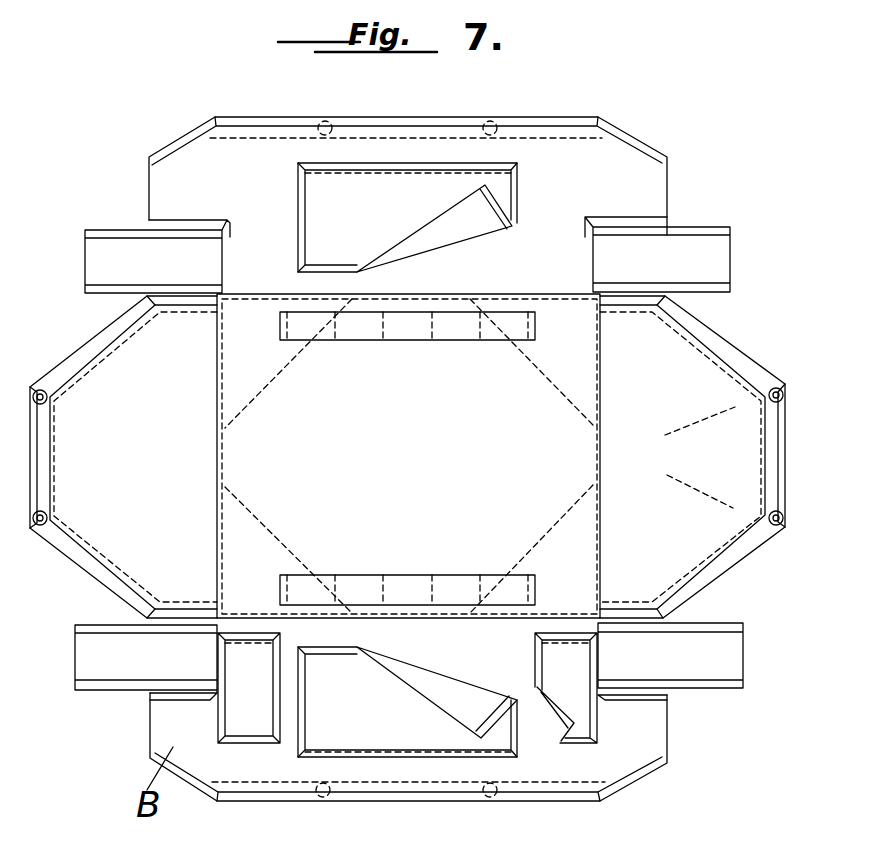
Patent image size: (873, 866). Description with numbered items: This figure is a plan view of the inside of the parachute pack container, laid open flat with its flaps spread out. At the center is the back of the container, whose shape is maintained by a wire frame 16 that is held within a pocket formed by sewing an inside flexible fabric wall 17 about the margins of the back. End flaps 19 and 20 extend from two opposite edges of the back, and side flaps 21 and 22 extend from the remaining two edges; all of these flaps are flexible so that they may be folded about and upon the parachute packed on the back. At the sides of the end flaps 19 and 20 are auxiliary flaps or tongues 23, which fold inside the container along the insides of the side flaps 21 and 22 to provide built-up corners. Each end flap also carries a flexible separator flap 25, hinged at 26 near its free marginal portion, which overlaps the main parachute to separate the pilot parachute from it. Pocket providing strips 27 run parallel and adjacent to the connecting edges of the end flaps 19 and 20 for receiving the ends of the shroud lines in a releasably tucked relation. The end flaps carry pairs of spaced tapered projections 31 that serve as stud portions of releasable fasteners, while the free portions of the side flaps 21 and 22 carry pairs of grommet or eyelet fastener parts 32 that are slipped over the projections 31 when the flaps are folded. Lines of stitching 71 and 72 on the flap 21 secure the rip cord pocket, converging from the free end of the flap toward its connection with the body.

The wire frame 16 is at (265, 392).
The inside flexible fabric wall 17 is at (547, 435).
The end flap 19 is at (578, 168).
The end flap 20 is at (567, 760).
The side flap 21 is at (713, 538).
The side flap 22 is at (97, 537).
The auxiliary flap or tongue 23 is at (127, 255).
The separator flap 25 is at (433, 233).
The hinge 26 is at (372, 163).
The pocket providing strip 27 is at (368, 332).
The tapered projection 31 is at (330, 132).
The grommet or eyelet fastener part 32 is at (33, 402).
The stitching 71 is at (712, 413).
The stitching 72 is at (688, 488).